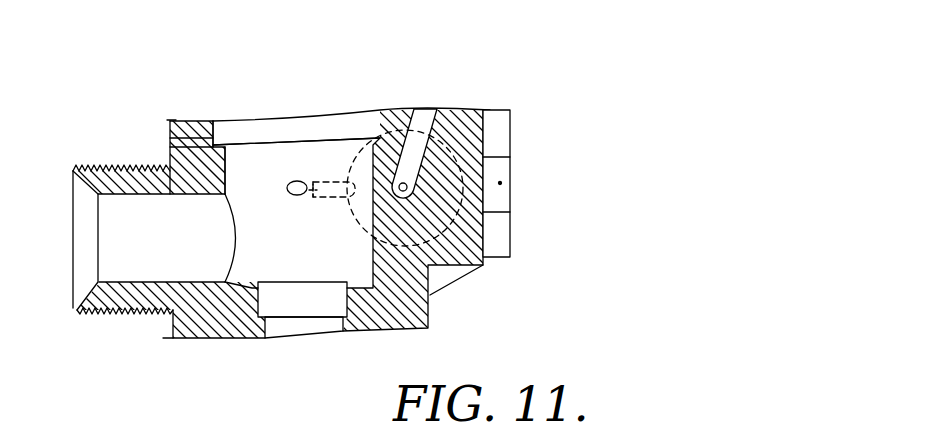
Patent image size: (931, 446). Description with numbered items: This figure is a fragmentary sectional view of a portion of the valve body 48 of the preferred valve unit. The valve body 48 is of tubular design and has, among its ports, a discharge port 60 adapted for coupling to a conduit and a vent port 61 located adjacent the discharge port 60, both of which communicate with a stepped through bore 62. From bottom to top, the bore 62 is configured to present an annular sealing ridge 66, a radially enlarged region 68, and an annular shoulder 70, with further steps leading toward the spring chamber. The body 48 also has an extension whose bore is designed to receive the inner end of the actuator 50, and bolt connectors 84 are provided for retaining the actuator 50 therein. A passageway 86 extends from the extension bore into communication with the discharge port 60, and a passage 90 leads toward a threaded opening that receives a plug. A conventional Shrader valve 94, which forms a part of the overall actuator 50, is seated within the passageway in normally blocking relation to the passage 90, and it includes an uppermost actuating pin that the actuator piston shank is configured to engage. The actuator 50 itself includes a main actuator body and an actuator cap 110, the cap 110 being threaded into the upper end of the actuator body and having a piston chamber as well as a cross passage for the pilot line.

The valve body 48 is at (170, 150).
The actuator 50 is at (516, 167).
The discharge port 60 is at (107, 307).
The vent port 61 is at (176, 120).
The stepped through bore 62 is at (303, 331).
The annular sealing ridge 66 is at (257, 287).
The radially enlarged region 68 is at (225, 178).
The annular shoulder 70 is at (214, 143).
The bolt connectors 84 is at (502, 122).
The passageway 86 is at (317, 198).
The passage 90 is at (425, 112).
The Shrader valve 94 is at (396, 180).
The actuator cap 110 is at (450, 273).